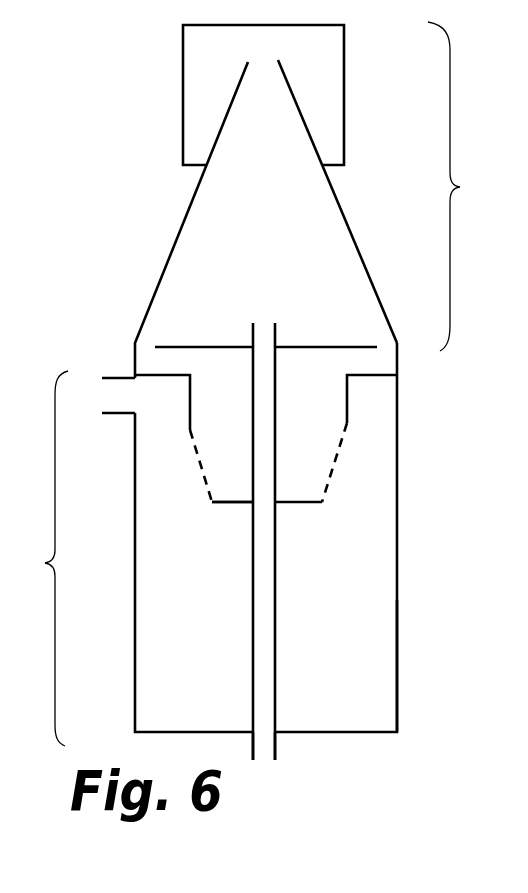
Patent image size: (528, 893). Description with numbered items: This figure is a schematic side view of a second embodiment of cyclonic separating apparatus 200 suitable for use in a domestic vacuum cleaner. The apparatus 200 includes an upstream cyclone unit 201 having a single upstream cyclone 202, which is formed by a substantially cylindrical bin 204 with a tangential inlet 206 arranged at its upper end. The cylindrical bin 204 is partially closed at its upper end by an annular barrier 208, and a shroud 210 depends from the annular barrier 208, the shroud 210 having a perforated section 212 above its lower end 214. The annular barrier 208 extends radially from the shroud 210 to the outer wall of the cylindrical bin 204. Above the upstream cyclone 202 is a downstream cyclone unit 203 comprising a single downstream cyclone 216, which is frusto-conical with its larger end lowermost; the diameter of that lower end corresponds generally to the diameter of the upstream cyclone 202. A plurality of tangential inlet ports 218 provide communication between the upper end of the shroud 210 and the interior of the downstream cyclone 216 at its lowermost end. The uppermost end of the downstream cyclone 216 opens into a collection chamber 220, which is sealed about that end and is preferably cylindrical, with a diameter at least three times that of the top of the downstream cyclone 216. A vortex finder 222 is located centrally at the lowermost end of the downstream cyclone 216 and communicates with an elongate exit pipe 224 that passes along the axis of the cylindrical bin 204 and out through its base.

The cyclonic separating apparatus 200 is at (146, 219).
The upstream cyclone unit 201 is at (39, 558).
The upstream cyclone 202 is at (399, 538).
The downstream cyclone unit 203 is at (466, 186).
The cylindrical bin 204 is at (399, 657).
The tangential inlet 206 is at (110, 377).
The annular barrier 208 is at (172, 378).
The shroud 210 is at (348, 425).
The perforated section 212 is at (333, 468).
The lower end 214 is at (224, 506).
The downstream cyclone 216 is at (325, 183).
The tangential inlet ports 218 is at (172, 360).
The collection chamber 220 is at (326, 62).
The vortex finder 222 is at (277, 337).
The exit pipe 224 is at (278, 752).